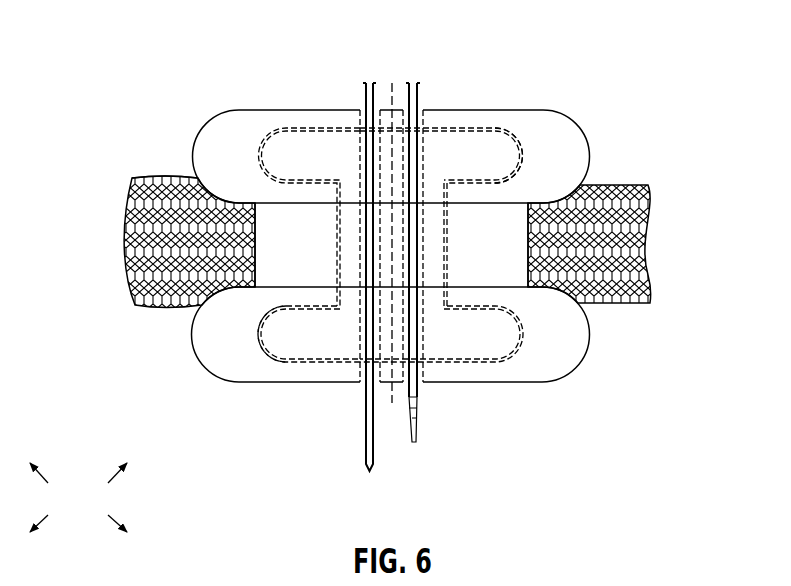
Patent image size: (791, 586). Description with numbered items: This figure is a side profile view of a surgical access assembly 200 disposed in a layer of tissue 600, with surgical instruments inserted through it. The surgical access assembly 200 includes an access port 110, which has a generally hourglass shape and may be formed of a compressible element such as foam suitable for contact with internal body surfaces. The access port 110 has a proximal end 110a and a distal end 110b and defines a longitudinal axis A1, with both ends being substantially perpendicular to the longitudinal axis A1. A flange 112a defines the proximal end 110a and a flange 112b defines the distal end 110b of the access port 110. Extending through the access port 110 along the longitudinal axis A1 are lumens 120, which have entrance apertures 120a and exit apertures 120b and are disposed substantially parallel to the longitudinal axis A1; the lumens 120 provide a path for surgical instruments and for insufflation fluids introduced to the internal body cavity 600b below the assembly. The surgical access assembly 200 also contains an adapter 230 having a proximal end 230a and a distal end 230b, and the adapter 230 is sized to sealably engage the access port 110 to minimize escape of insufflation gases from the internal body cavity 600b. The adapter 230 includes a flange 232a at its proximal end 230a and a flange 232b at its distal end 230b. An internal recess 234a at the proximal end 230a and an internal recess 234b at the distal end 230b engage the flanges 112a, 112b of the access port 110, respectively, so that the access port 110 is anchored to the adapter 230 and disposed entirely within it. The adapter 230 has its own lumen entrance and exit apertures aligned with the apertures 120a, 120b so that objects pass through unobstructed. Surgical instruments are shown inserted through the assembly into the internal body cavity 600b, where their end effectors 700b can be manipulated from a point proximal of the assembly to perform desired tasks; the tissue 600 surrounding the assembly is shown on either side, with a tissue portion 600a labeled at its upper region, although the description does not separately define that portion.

The surgical access assembly 200 is at (200, 38).
The access port 110 is at (453, 238).
The proximal end 110a is at (485, 128).
The distal end 110b is at (492, 362).
The flange 112a is at (521, 148).
The flange 112b is at (267, 312).
The lumen 120 is at (423, 274).
The entrance aperture 120a is at (424, 110).
The exit aperture 120b is at (360, 382).
The adapter 230 is at (252, 243).
The proximal end 230a is at (295, 108).
The distal end 230b is at (245, 383).
The flange 232a is at (192, 157).
The flange 232b is at (192, 347).
The internal recess 234a is at (258, 155).
The internal recess 234b is at (265, 343).
The layer of tissue 600 is at (141, 285).
The mesh end portion 600a is at (138, 177).
The internal body cavity 600b is at (78, 497).
The end effector 700b is at (368, 450).
The longitudinal axis A1 is at (393, 242).